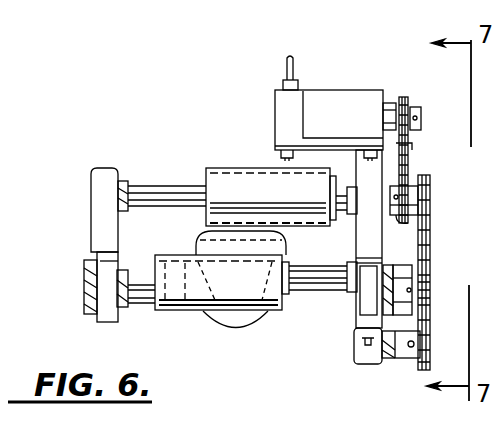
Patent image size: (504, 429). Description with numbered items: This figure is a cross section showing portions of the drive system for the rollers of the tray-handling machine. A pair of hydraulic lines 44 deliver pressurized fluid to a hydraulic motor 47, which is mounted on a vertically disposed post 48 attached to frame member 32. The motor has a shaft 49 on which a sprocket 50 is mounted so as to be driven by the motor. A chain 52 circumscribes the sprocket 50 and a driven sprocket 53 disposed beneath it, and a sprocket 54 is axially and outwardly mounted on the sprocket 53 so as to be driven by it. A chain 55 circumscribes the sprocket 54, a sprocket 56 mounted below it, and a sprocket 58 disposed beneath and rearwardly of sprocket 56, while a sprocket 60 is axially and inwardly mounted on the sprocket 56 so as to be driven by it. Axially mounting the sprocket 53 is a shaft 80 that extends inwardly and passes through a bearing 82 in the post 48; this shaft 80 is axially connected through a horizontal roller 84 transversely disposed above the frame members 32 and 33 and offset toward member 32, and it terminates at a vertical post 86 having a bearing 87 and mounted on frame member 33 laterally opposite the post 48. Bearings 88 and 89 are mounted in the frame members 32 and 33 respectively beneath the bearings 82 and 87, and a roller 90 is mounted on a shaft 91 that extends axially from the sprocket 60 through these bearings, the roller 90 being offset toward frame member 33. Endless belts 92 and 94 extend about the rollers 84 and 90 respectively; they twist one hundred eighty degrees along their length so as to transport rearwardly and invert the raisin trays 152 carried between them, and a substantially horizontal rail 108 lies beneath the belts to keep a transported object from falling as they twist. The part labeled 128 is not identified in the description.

The hydraulic lines 44 is at (288, 58).
The hydraulic motor 47 is at (351, 102).
The shaft 49 is at (400, 97).
The sprocket 50 is at (418, 109).
The chain 52 is at (412, 146).
The vertically disposed post 48 is at (369, 175).
The sprocket 54 is at (419, 191).
The driven sprocket 53 is at (391, 218).
The chain 55 is at (429, 224).
The sprocket 56 is at (430, 290).
The sprocket 60 is at (399, 298).
The sprocket 58 is at (411, 360).
The frame member 32 is at (353, 330).
The vertical post 86 is at (100, 217).
The frame member 33 is at (90, 316).
The clamp 128 is at (83, 278).
The bearing 87 is at (124, 180).
The shaft 80 is at (157, 186).
The horizontal roller 84 is at (205, 186).
The endless belt 92 is at (251, 168).
The bearing 82 is at (348, 195).
The roller 90 is at (286, 308).
The bearing 88 is at (338, 296).
The shaft 91 is at (309, 311).
The endless belt 94 is at (173, 309).
The bearing 89 is at (125, 306).
The horizontal rail 108 is at (240, 327).
The trays 152 is at (190, 223).